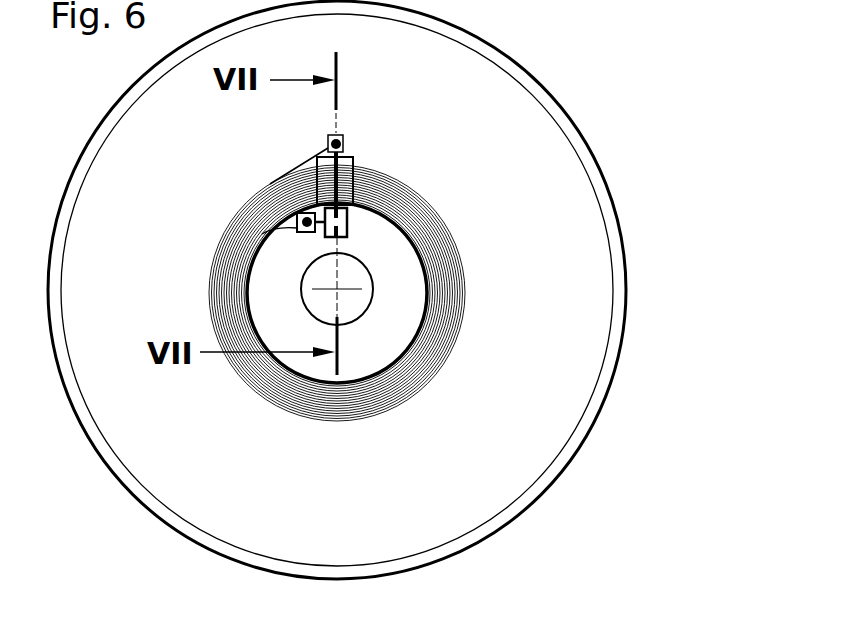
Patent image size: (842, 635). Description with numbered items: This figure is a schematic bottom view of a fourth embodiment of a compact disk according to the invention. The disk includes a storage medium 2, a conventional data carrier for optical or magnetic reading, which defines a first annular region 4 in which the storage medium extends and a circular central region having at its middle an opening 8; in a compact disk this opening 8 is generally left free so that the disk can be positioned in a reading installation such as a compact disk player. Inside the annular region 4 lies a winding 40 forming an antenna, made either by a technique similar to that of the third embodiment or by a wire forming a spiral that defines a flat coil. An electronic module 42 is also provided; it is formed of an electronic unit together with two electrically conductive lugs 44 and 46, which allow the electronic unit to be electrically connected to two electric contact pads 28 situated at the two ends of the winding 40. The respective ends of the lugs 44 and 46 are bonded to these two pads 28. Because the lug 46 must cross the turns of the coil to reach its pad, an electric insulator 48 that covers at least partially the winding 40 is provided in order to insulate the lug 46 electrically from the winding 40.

The storage medium 2 is at (488, 162).
The first annular region 4 is at (622, 198).
The opening 8 is at (360, 272).
The electric contact pads 28 is at (340, 134).
The winding 40 is at (447, 345).
The electronic module 42 is at (376, 226).
The electrically conductive lug 44 is at (318, 234).
The electrically conductive lug 46 is at (340, 183).
The electric insulator 48 is at (350, 156).